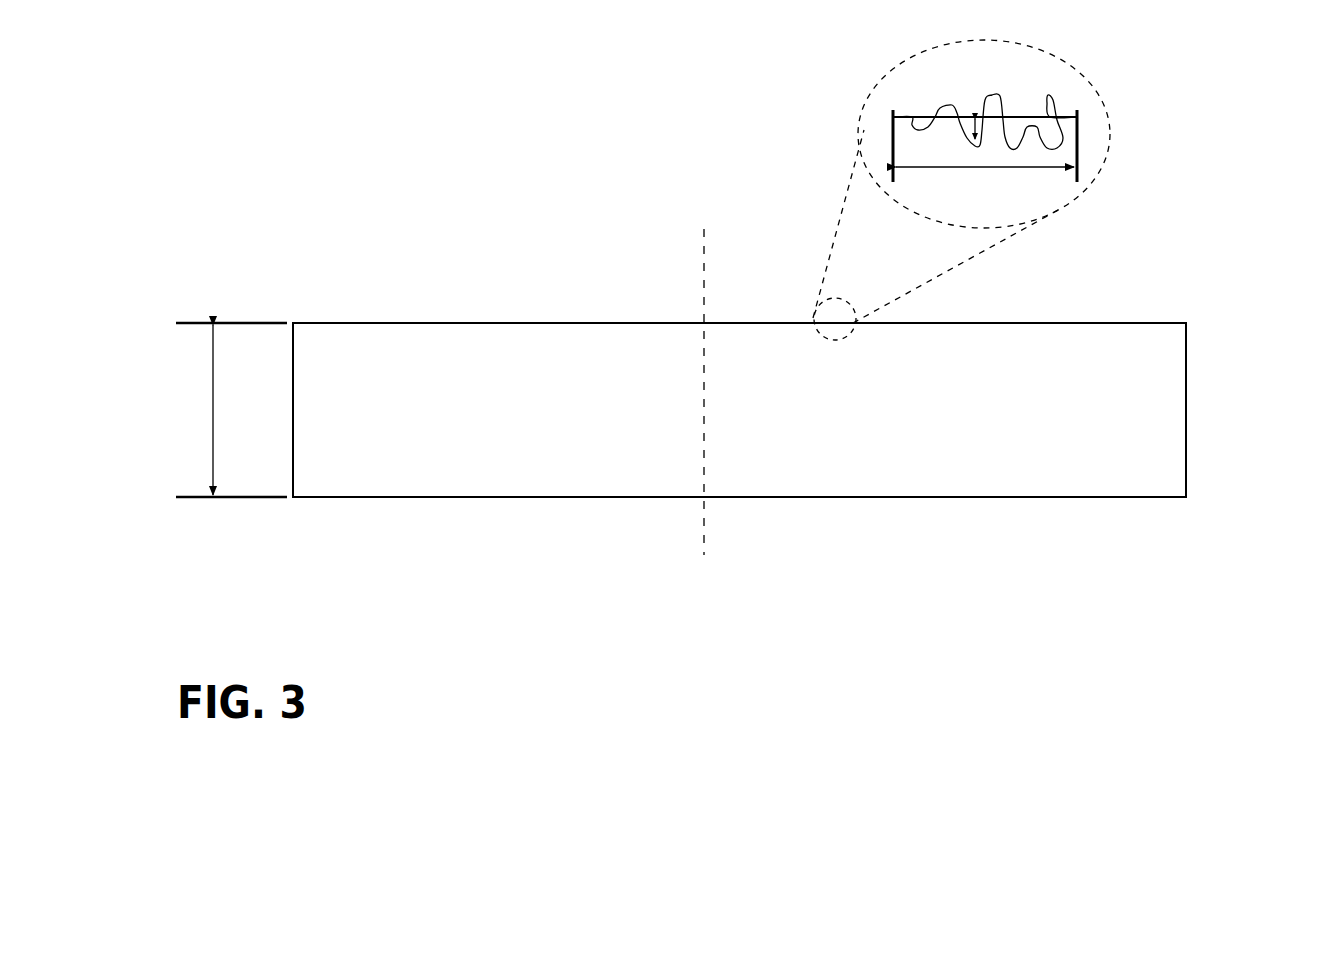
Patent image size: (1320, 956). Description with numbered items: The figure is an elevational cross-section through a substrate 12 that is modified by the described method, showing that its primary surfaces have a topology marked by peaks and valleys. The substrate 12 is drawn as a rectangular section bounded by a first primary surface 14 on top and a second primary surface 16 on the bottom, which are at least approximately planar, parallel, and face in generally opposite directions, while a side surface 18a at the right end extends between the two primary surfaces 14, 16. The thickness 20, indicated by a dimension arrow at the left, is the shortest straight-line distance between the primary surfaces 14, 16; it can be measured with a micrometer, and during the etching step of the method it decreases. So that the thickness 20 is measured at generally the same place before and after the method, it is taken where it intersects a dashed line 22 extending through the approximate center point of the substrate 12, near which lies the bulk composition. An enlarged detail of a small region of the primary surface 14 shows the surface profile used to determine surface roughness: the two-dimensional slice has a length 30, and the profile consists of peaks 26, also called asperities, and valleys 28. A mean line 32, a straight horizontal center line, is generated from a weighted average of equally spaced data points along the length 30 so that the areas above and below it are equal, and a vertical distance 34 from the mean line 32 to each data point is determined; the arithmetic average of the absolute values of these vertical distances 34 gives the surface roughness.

The substrate 12 is at (396, 189).
The primary surface 14 is at (497, 320).
The primary surface 16 is at (502, 499).
The side surface 18a is at (1187, 437).
The thickness 20 is at (212, 422).
The line 22 is at (705, 250).
The peaks 26 is at (1047, 97).
The valleys 28 is at (1076, 155).
The length 30 is at (983, 170).
The mean line 32 is at (922, 117).
The vertical distance 34 is at (975, 127).